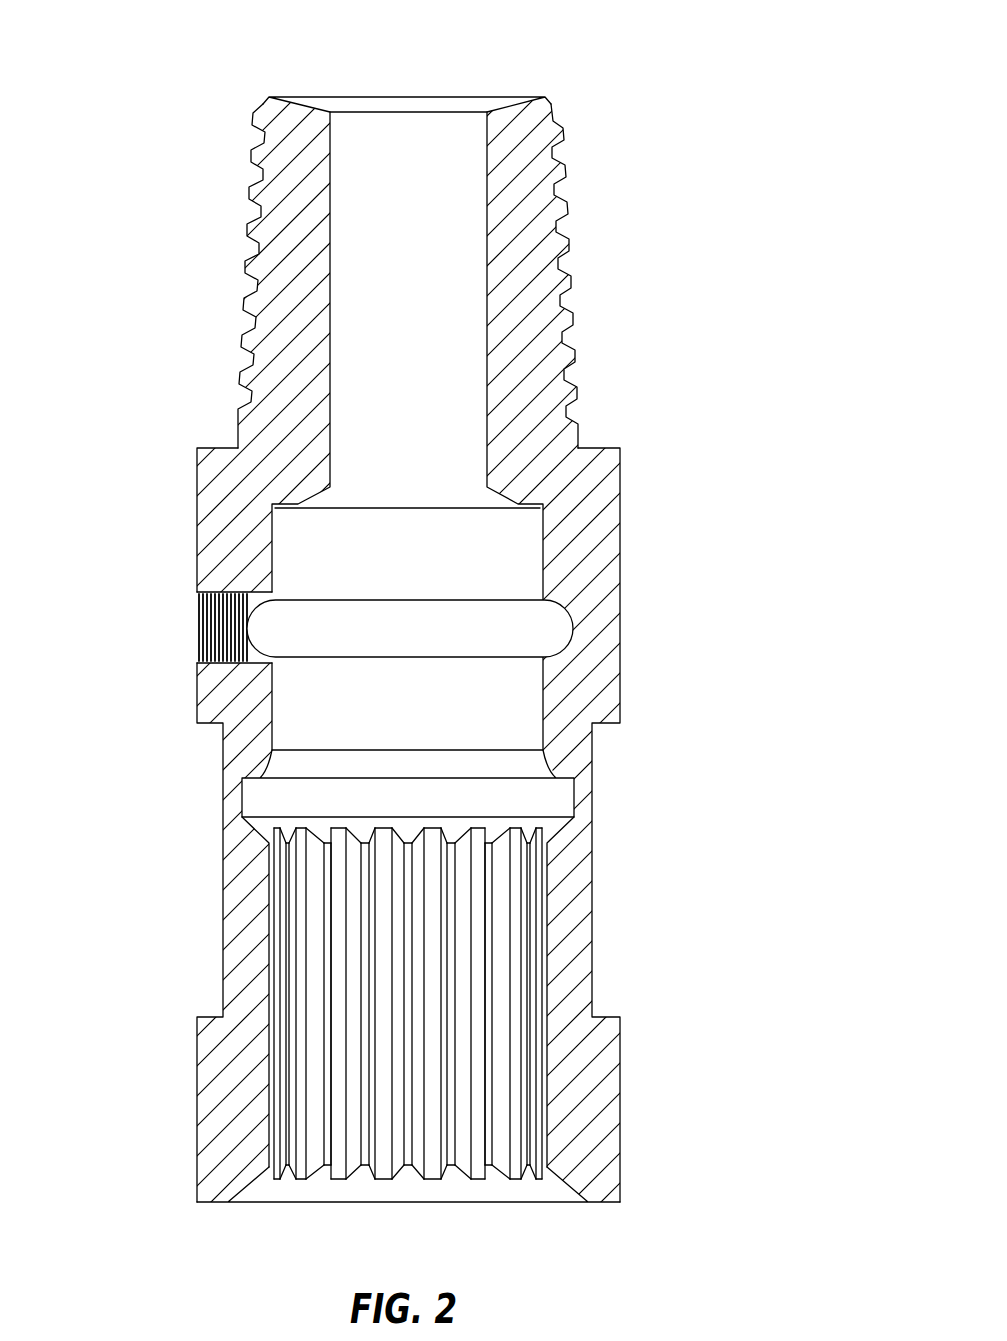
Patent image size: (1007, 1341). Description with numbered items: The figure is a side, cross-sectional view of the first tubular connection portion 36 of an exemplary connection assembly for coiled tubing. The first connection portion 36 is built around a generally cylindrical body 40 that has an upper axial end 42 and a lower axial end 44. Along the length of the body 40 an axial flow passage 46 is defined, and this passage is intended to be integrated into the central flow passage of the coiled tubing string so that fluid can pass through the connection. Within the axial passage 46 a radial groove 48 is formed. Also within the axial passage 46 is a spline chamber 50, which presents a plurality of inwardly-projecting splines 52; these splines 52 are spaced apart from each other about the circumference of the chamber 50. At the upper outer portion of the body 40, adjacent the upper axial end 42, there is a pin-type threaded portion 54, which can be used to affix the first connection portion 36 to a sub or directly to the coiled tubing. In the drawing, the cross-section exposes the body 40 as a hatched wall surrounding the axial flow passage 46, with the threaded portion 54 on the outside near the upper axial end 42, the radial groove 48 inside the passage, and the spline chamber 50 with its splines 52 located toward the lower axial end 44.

The first tubular connection portion 36 is at (503, 650).
The body 40 is at (232, 488).
The upper axial end 42 is at (513, 97).
The lower axial end 44 is at (267, 1203).
The axial flow passage 46 is at (396, 843).
The radial groove 48 is at (563, 633).
The spline chamber 50 is at (396, 1003).
The splines 52 is at (323, 1033).
The pin-type threaded portion 54 is at (572, 217).